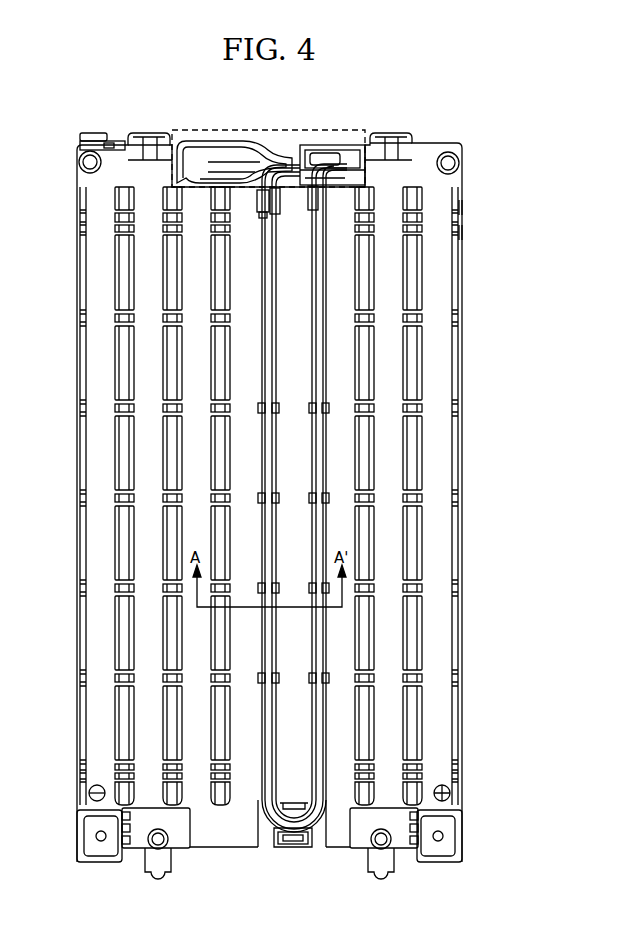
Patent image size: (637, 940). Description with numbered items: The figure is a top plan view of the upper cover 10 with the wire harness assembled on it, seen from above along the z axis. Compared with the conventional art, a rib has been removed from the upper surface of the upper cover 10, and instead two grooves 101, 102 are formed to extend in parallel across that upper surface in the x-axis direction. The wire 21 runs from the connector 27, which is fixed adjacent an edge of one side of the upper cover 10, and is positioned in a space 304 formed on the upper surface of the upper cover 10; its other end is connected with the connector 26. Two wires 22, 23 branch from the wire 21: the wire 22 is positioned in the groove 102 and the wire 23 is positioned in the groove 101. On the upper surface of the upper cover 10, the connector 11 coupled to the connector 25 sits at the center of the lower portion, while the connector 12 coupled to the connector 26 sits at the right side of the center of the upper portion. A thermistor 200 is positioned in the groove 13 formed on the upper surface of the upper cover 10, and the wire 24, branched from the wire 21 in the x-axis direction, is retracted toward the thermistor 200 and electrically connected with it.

The upper cover 10 is at (461, 147).
The connector 11 is at (307, 848).
The connector 12 is at (347, 155).
The groove 13 is at (281, 199).
The wire 21 is at (208, 158).
The wire 22 is at (262, 690).
The wire 23 is at (320, 690).
The wire 24 is at (264, 186).
The connector 25 is at (288, 845).
The connector 26 is at (325, 158).
The connector 27 is at (97, 133).
The groove 101 is at (327, 443).
The groove 102 is at (260, 443).
The thermistor 200 is at (273, 469).
The space 304 is at (297, 129).